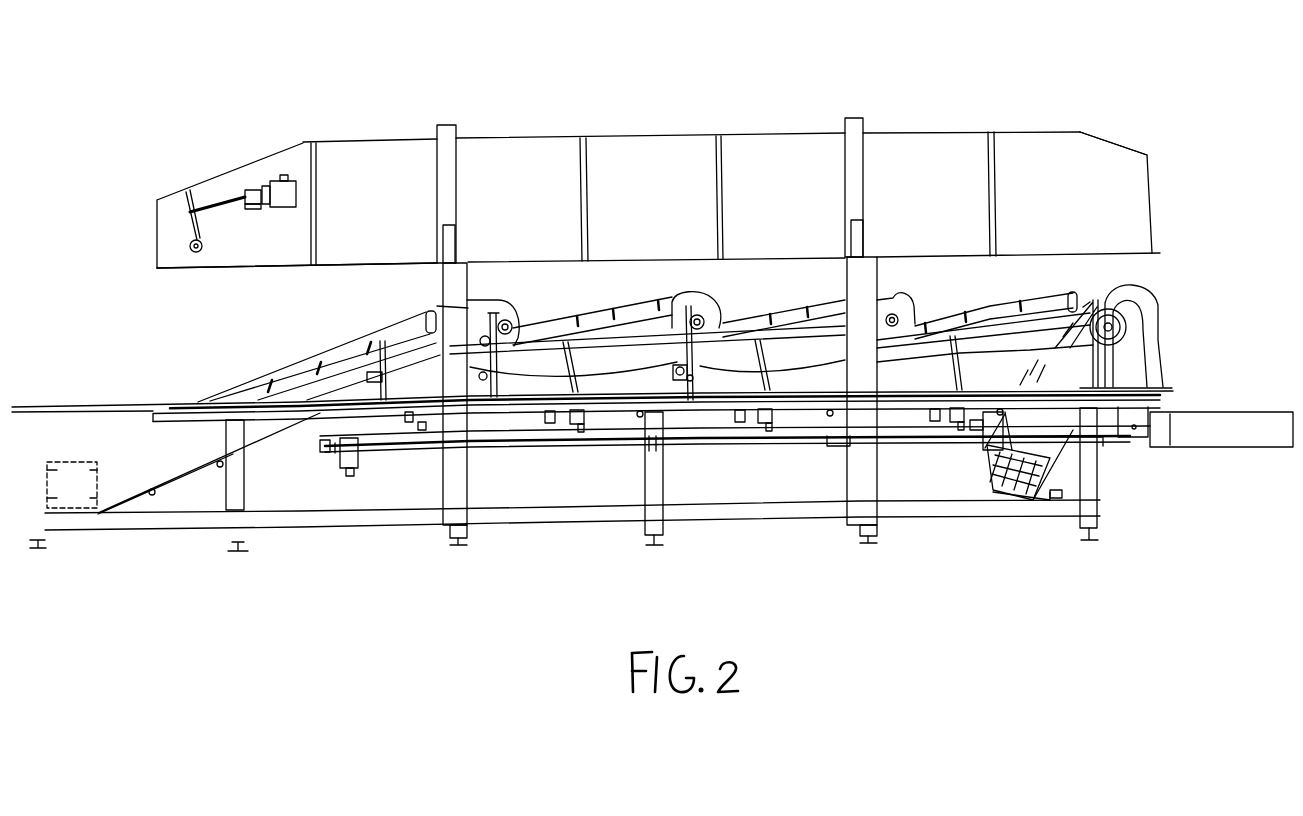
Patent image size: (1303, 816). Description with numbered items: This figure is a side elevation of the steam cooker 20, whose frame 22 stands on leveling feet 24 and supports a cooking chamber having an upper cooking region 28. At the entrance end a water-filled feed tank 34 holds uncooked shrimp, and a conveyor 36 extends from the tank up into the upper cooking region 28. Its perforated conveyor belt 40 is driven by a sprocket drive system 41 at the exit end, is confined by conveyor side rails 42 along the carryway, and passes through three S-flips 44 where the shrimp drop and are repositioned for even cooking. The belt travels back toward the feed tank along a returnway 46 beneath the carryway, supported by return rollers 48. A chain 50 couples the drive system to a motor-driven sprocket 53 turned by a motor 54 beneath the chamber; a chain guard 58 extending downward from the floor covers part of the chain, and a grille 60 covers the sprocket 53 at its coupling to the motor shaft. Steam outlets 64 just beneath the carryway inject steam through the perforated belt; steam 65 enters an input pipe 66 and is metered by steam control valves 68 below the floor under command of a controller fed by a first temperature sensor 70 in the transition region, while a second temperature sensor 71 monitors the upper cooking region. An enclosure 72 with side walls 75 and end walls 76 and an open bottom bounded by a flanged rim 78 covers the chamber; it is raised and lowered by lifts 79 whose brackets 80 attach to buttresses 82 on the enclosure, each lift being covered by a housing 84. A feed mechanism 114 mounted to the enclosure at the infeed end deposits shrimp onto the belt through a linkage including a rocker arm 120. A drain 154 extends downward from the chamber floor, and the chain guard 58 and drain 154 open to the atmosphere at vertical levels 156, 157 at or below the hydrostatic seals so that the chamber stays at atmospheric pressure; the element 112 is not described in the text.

The cooker 20 is at (801, 52).
The frame 22 is at (526, 518).
The leveling feet 24 is at (245, 548).
The upper cooking region 28 is at (1170, 343).
The feed tank 34 is at (143, 490).
The conveyor 36 is at (720, 312).
The perforated conveyor belt 40 is at (775, 374).
The sprocket drive system 41 is at (1112, 310).
The conveyor side rails 42 is at (626, 312).
The S-flips 44 is at (905, 318).
The returnway 46 is at (586, 374).
The return rollers 48 is at (678, 374).
The chain 50 is at (1050, 384).
The motor-driven sprocket 53 is at (992, 478).
The motor 54 is at (985, 442).
The chain guard 58 is at (1032, 428).
The grille 60 is at (1028, 500).
The steam outlets 64 is at (540, 338).
The steam 65 is at (319, 449).
The input pipe 66 is at (380, 454).
The steam control valves 68 is at (752, 440).
The first temperature sensor 70 is at (692, 378).
The second temperature sensor 71 is at (672, 316).
The enclosure 72 is at (918, 138).
The side walls 75 is at (1082, 145).
The end walls 76 is at (157, 222).
The flanged rim 78 is at (370, 268).
The lifts 79 is at (876, 473).
The brackets 80 is at (456, 250).
The buttresses 82 is at (458, 137).
The housing 84 is at (468, 482).
The drive unit 112 is at (63, 540).
The feed mechanism 114 is at (253, 206).
The rocker arm 120 is at (192, 245).
The drain 154 is at (340, 436).
The vertical level 156 is at (368, 482).
The vertical level 157 is at (1103, 447).